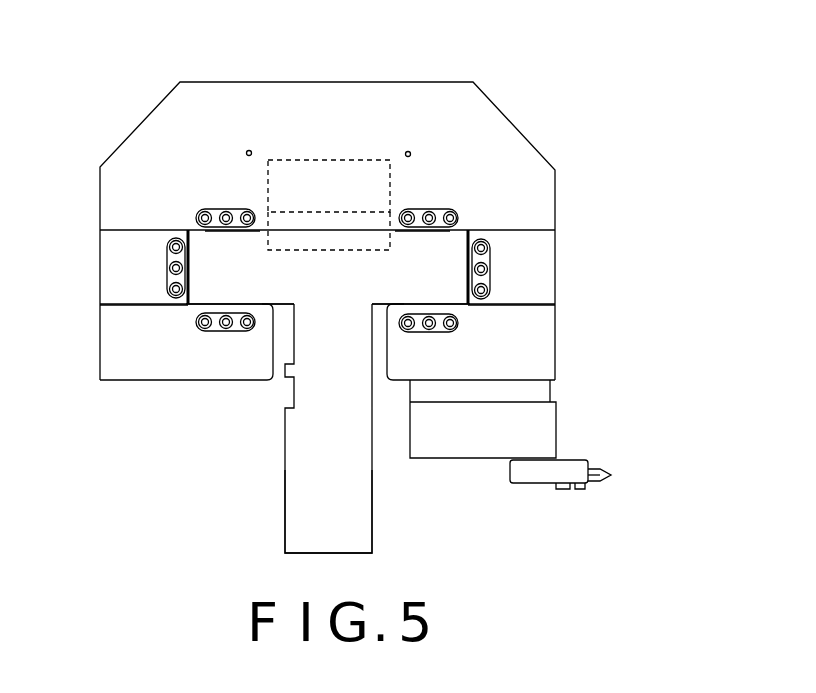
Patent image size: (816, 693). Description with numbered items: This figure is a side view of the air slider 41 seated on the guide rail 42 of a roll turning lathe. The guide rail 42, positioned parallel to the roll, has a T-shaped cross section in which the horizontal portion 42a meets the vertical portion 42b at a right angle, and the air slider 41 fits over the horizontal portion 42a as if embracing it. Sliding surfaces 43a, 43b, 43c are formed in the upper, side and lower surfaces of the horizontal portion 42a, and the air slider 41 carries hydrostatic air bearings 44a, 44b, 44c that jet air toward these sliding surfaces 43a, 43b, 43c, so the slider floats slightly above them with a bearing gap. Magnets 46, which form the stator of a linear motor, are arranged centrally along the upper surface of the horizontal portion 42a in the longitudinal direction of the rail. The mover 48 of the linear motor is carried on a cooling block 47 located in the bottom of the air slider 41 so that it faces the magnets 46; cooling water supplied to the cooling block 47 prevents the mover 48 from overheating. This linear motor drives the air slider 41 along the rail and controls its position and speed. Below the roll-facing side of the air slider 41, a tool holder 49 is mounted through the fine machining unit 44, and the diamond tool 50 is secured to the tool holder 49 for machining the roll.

The air slider 41 is at (328, 100).
The guide rail 42 is at (282, 440).
The horizontal portion 42a is at (208, 255).
The vertical portion 42b is at (301, 510).
The sliding surface 43a is at (228, 233).
The sliding surface 43b is at (192, 275).
The sliding surface 43c is at (420, 300).
The fine machining unit 44 is at (537, 425).
The hydrostatic air bearing 44a is at (237, 208).
The hydrostatic air bearing 44b is at (163, 257).
The hydrostatic air bearing 44c is at (239, 333).
The magnets 46 is at (314, 245).
The cooling block 47 is at (287, 177).
The mover 48 is at (352, 217).
The tool holder 49 is at (535, 475).
The diamond tool 50 is at (613, 476).